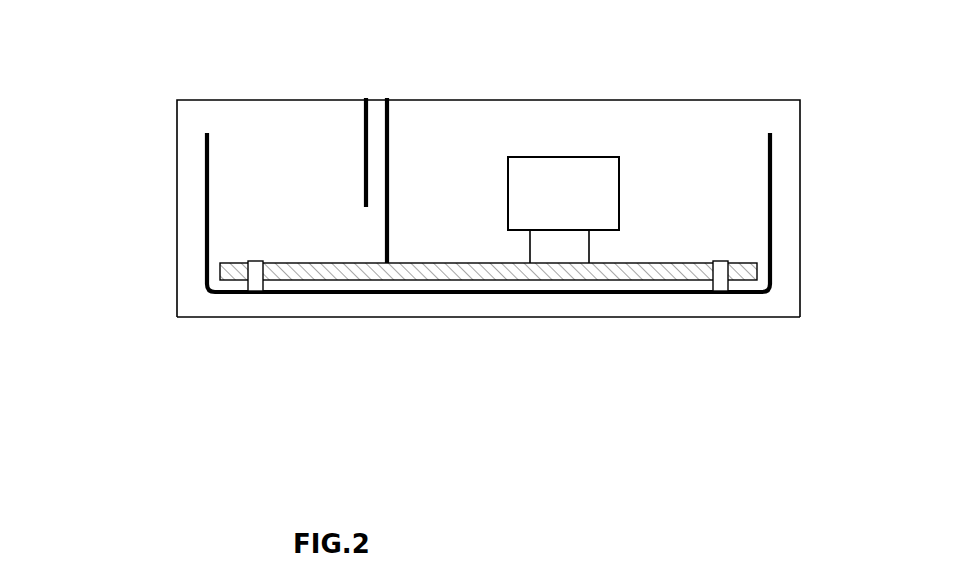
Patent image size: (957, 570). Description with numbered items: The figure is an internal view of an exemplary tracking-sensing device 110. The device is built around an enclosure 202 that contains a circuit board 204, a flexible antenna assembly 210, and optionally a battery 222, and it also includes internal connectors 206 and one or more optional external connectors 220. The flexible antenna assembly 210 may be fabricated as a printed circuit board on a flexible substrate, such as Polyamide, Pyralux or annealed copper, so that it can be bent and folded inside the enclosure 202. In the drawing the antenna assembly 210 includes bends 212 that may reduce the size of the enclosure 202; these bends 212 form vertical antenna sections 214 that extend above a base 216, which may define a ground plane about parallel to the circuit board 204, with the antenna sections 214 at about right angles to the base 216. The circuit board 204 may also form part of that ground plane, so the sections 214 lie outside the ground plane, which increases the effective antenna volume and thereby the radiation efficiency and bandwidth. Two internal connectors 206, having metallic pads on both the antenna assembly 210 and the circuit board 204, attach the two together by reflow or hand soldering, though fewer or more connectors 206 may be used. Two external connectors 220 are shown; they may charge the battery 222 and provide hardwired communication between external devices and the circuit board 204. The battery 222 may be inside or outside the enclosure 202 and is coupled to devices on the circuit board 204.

The tracking-sensing device 110 is at (158, 148).
The enclosure 202 is at (488, 243).
The circuit board 204 is at (434, 263).
The internal connectors 206 is at (255, 261).
The flexible antenna assembly 210 is at (489, 311).
The bends 212 is at (207, 292).
The vertical antenna sections 214 is at (210, 163).
The base 216 is at (415, 317).
The external connectors 220 is at (367, 162).
The battery 222 is at (563, 210).